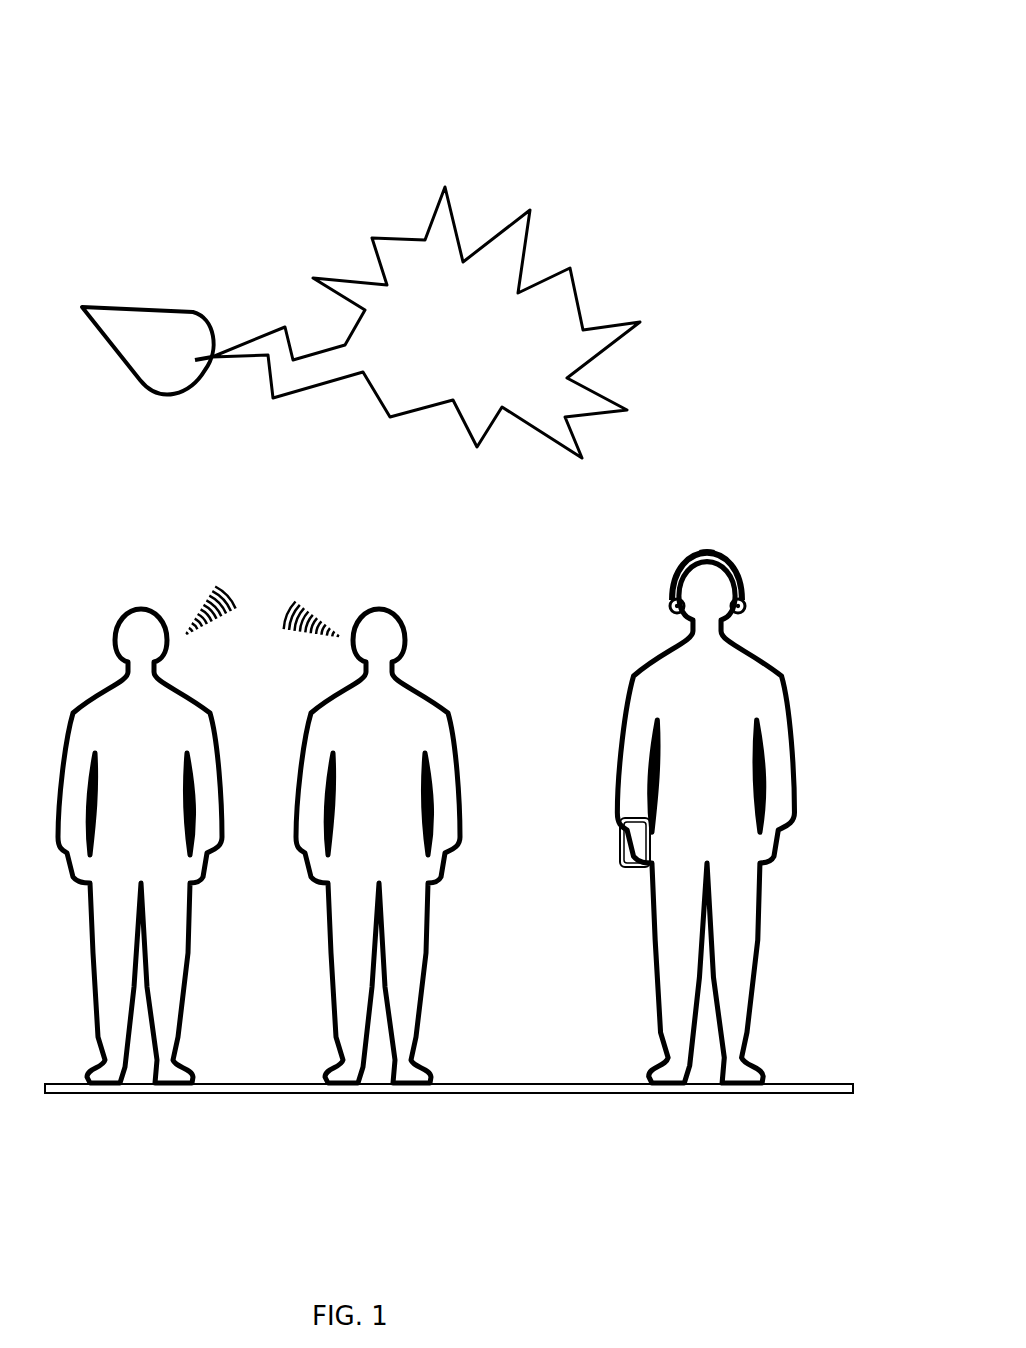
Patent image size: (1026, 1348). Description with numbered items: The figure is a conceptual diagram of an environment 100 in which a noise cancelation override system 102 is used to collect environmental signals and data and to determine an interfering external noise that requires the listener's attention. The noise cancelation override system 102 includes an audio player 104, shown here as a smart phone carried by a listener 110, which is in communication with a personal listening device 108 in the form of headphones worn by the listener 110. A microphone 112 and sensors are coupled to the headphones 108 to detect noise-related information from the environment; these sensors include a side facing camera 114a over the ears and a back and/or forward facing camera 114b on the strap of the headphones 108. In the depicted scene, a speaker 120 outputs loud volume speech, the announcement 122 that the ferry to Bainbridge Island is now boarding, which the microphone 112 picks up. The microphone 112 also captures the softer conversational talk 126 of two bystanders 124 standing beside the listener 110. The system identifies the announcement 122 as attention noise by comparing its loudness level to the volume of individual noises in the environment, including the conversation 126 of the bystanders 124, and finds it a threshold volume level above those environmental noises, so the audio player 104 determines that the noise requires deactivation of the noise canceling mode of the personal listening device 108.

The environment 100 is at (62, 36).
The noise cancelation override system 102 is at (733, 768).
The audio player 104 is at (627, 867).
The personal listening device 108 is at (668, 603).
The listener 110 is at (645, 663).
The microphone 112 is at (672, 592).
The side facing camera 114a is at (743, 592).
The back and/or forward facing camera 114b is at (706, 530).
The speaker 120 is at (157, 310).
The announcement 122 is at (547, 295).
The bystander 124 is at (138, 622).
The conversational talk 126 is at (272, 592).